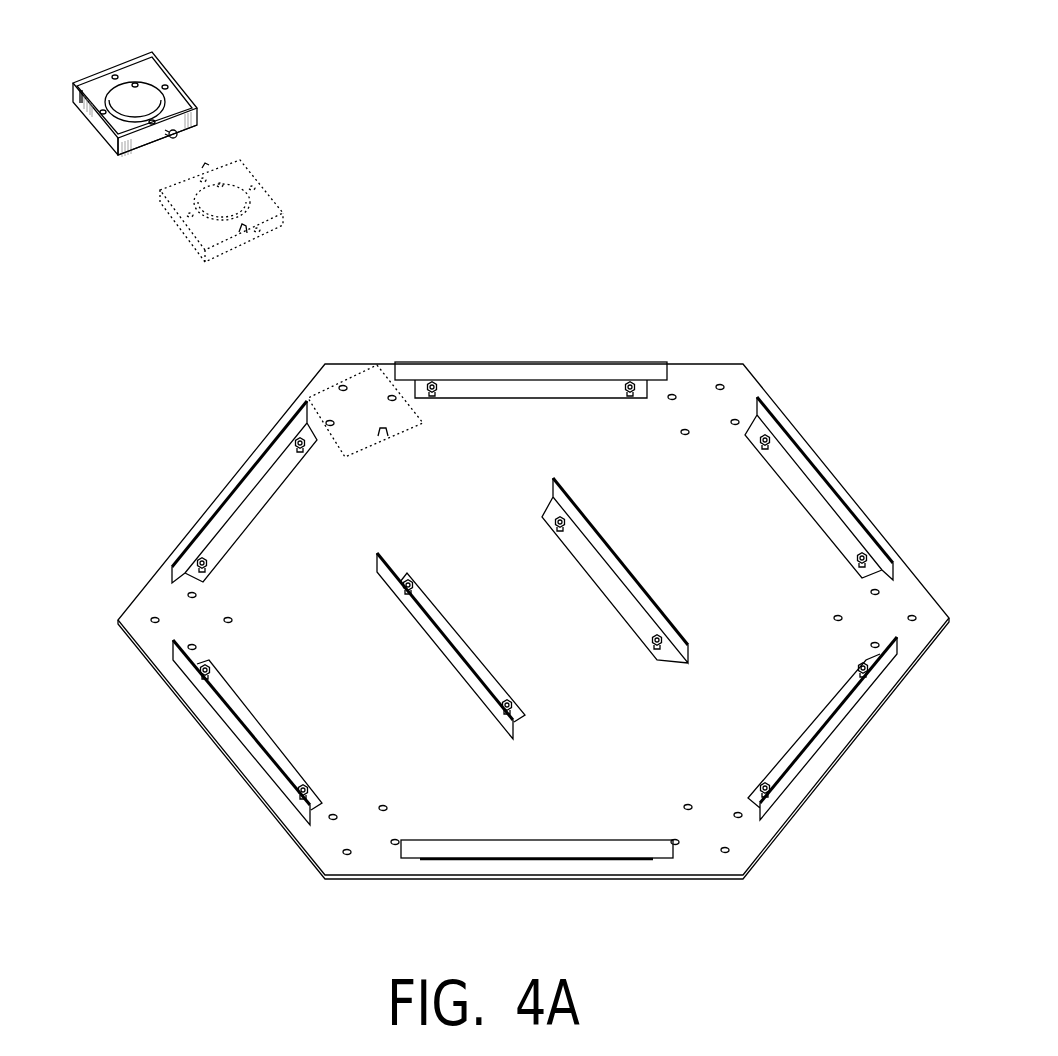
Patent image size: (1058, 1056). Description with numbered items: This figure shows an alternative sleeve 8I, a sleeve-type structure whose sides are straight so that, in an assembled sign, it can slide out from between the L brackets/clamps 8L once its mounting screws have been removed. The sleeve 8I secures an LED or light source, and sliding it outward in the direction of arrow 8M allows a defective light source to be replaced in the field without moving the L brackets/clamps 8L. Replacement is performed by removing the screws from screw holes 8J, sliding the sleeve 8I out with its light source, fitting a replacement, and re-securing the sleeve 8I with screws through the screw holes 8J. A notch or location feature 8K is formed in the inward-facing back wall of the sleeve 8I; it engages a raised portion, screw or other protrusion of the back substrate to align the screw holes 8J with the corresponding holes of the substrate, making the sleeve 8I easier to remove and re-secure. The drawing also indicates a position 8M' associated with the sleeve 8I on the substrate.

The sleeve 8I is at (82, 105).
The screw holes 8J is at (117, 140).
The notch or location feature 8K is at (113, 75).
The L brackets/clamps 8L is at (582, 400).
The arrow 8M is at (208, 153).
The installed footprint on hex plate 8M' is at (339, 355).